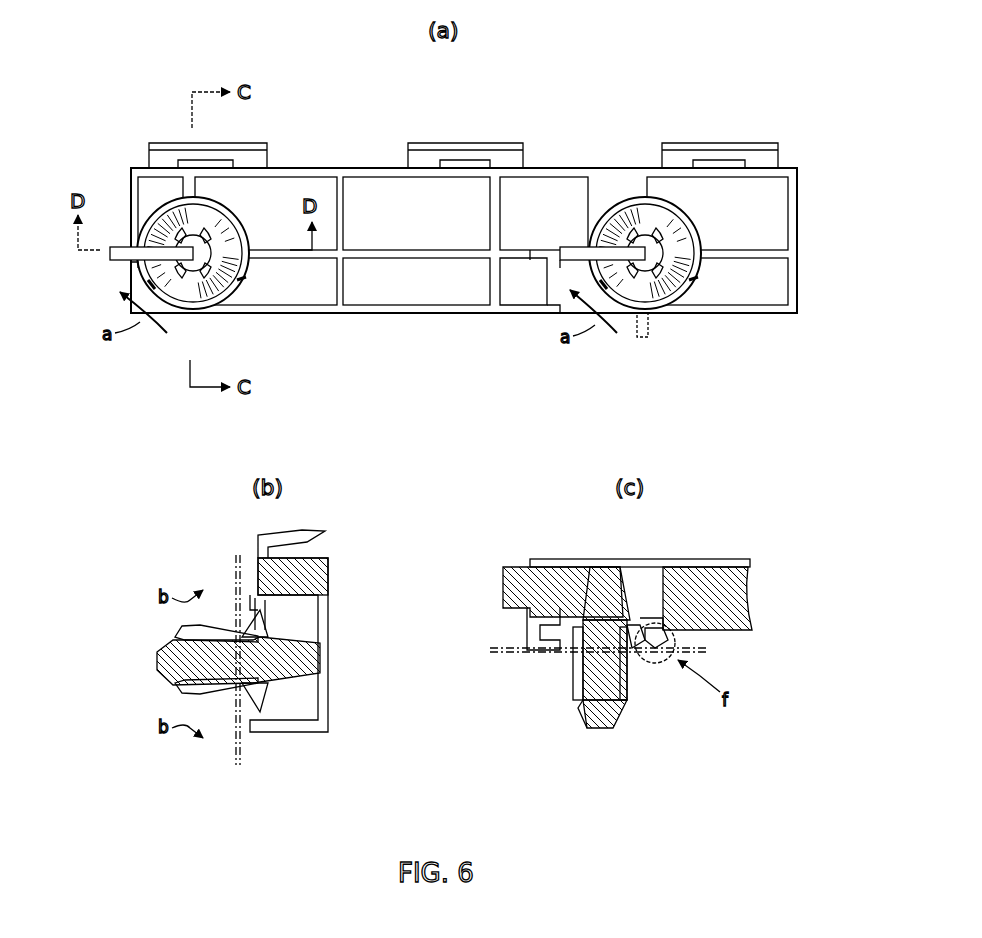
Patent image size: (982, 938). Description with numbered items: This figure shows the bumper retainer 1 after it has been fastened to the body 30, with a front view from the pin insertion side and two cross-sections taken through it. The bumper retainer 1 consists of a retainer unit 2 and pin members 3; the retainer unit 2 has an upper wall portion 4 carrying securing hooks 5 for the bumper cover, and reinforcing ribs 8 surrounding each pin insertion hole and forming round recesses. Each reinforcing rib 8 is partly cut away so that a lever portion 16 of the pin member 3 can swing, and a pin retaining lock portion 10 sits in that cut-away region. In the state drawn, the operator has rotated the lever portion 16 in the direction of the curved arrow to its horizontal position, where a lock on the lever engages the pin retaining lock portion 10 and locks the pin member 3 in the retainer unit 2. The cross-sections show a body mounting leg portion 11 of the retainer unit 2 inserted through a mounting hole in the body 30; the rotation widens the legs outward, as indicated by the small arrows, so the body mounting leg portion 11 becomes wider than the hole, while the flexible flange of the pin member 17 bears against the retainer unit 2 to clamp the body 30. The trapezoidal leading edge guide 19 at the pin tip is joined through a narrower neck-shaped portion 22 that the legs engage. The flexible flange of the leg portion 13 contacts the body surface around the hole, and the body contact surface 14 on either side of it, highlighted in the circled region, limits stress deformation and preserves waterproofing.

The bumper retainer 1 is at (340, 128).
The retainer unit 2 is at (619, 160).
The pin member 3 is at (246, 284).
The upper wall portion 4 is at (558, 167).
The securing hook 5 is at (164, 143).
The reinforcing rib 8 is at (250, 272).
The pin retaining lock portion 10 is at (138, 264).
The body mounting leg portion 11 is at (196, 632).
The flexible flange of the leg portion 13 is at (238, 690).
The body contact surface 14 is at (658, 650).
The lever portion 16 is at (122, 247).
The flexible flange of the pin member 17 is at (214, 218).
The leading edge guide 19 is at (160, 660).
The neck-shaped portion 22 is at (590, 720).
The body 30 is at (233, 572).